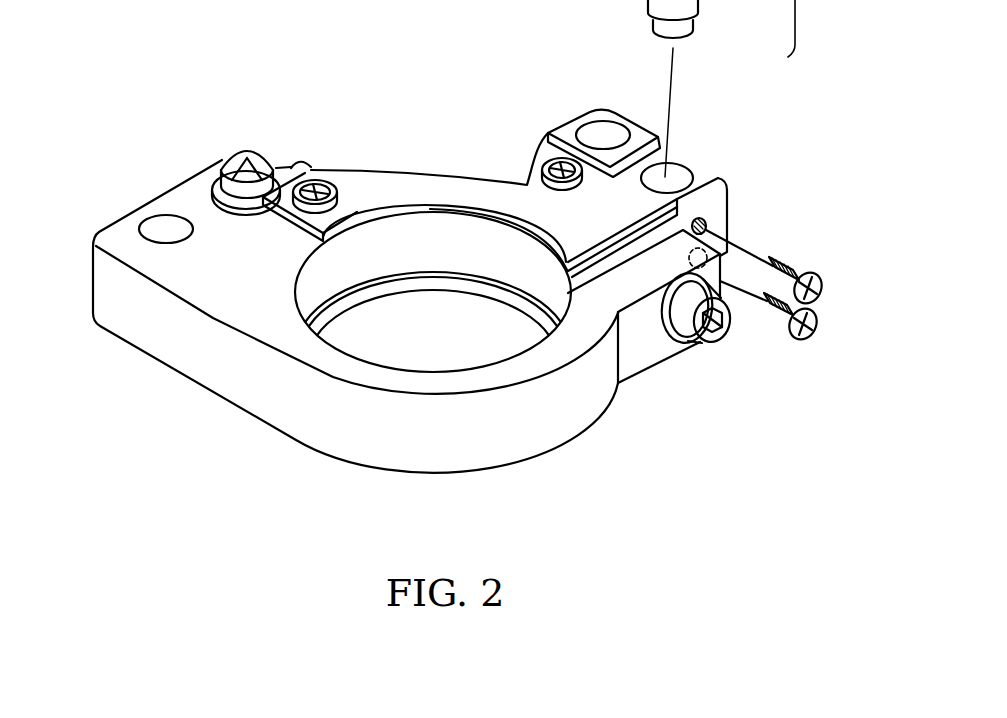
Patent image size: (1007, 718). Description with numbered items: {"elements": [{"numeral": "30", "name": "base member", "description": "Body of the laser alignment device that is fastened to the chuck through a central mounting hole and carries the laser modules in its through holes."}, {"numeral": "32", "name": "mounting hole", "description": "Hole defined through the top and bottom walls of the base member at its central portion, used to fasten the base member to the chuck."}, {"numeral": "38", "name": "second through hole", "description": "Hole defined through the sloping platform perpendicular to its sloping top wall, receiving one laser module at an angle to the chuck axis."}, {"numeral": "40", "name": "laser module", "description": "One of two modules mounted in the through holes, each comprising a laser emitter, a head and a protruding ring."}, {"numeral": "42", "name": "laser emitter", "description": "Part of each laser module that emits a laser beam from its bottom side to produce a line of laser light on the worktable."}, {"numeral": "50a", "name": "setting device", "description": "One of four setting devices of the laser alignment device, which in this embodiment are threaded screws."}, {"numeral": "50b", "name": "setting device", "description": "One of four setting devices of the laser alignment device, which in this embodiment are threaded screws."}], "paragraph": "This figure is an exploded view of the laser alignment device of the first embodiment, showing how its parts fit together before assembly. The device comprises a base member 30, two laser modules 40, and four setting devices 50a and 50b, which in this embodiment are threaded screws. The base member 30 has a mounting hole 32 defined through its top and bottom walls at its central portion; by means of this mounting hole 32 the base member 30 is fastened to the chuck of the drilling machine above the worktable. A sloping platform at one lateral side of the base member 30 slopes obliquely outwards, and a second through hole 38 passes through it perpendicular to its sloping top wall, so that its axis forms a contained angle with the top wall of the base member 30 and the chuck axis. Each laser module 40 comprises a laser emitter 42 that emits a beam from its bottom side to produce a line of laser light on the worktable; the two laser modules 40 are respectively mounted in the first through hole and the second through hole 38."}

The clamp base body 30 is at (207, 365).
The bore opening 32 is at (392, 353).
The mounting hole 38 is at (687, 172).
The locating pin screw 40 is at (230, 150).
The sensor 42 is at (690, 20).
The fastening screw 50a is at (303, 162).
The fastening screws 50b is at (813, 297).